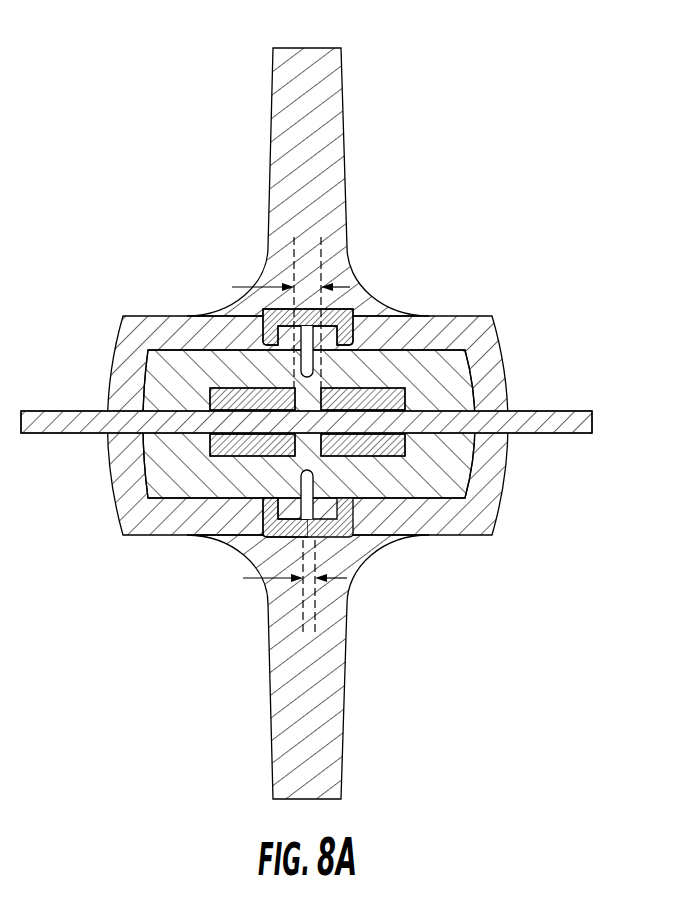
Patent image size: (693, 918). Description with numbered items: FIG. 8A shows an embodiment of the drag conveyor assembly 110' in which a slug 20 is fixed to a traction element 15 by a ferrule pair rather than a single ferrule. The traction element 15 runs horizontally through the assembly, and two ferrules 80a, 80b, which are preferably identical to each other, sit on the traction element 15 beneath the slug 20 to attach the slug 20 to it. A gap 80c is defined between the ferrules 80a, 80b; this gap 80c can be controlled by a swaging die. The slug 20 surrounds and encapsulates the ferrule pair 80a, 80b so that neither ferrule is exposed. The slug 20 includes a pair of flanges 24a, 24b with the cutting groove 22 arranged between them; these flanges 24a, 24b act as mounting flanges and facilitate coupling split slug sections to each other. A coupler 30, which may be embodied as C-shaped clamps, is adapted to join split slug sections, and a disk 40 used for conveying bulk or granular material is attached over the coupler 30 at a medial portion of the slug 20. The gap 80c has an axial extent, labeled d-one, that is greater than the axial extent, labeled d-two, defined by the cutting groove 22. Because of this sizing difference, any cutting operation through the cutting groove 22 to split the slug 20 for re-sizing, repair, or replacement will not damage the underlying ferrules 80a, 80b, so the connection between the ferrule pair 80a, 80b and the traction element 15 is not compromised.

The drag conveyor assembly 110' is at (306, 422).
The traction element 15 is at (537, 422).
The slug 20 is at (432, 506).
The cutting groove 22 is at (300, 623).
The flange 24a is at (265, 512).
The flange 24b is at (352, 508).
The coupler 30 is at (341, 352).
The disk 40 is at (330, 71).
The ferrule 80a is at (237, 393).
The ferrule 80b is at (375, 397).
The gap 80c is at (306, 385).